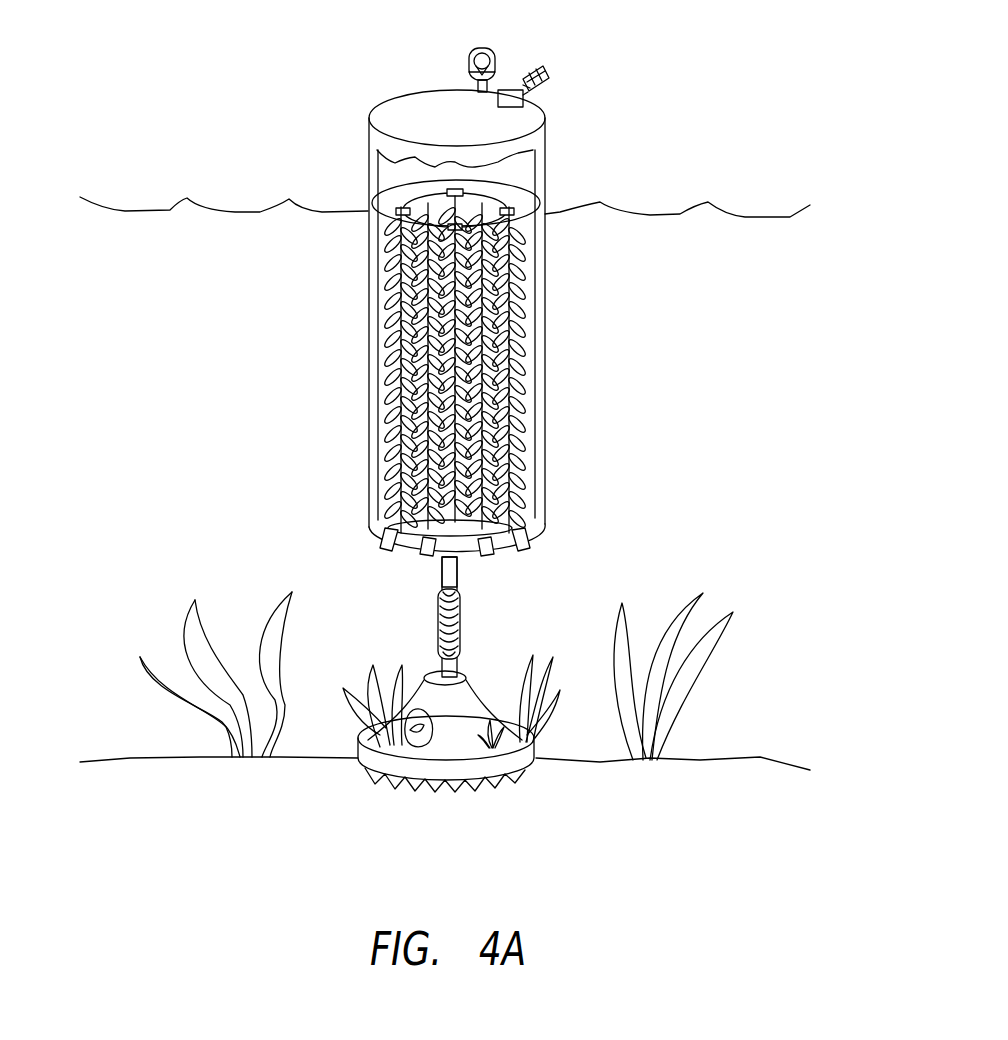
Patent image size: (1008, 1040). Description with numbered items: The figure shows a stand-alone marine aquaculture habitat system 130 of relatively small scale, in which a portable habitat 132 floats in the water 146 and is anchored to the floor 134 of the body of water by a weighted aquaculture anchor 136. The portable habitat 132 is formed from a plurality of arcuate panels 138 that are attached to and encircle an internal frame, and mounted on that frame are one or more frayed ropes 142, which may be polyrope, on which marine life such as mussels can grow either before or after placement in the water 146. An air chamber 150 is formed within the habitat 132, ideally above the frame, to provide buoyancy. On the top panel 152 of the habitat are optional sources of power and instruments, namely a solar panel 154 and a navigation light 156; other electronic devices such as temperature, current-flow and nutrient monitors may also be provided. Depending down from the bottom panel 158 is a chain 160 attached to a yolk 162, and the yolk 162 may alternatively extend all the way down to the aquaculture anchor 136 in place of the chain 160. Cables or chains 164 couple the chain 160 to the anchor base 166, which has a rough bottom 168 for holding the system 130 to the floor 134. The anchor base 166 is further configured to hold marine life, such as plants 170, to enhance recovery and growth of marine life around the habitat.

The stand-alone marine aquaculture habitat system 130 is at (590, 322).
The portable habitat 132 is at (548, 286).
The floor 134 is at (112, 757).
The weighted aquaculture anchor 136 is at (545, 740).
The arcuate panels 138 is at (543, 368).
The frayed ropes 142 is at (540, 195).
The water 146 is at (165, 201).
The air chamber 150 is at (518, 165).
The top panel 152 is at (412, 117).
The solar panel 154 is at (540, 70).
The navigation light 156 is at (486, 50).
The bottom panel 158 is at (472, 550).
The chain 160 is at (440, 622).
The yolk 162 is at (443, 566).
The cables or chains 164 is at (480, 683).
The anchor base 166 is at (418, 776).
The rough bottom 168 is at (455, 778).
The plants 170 is at (552, 650).